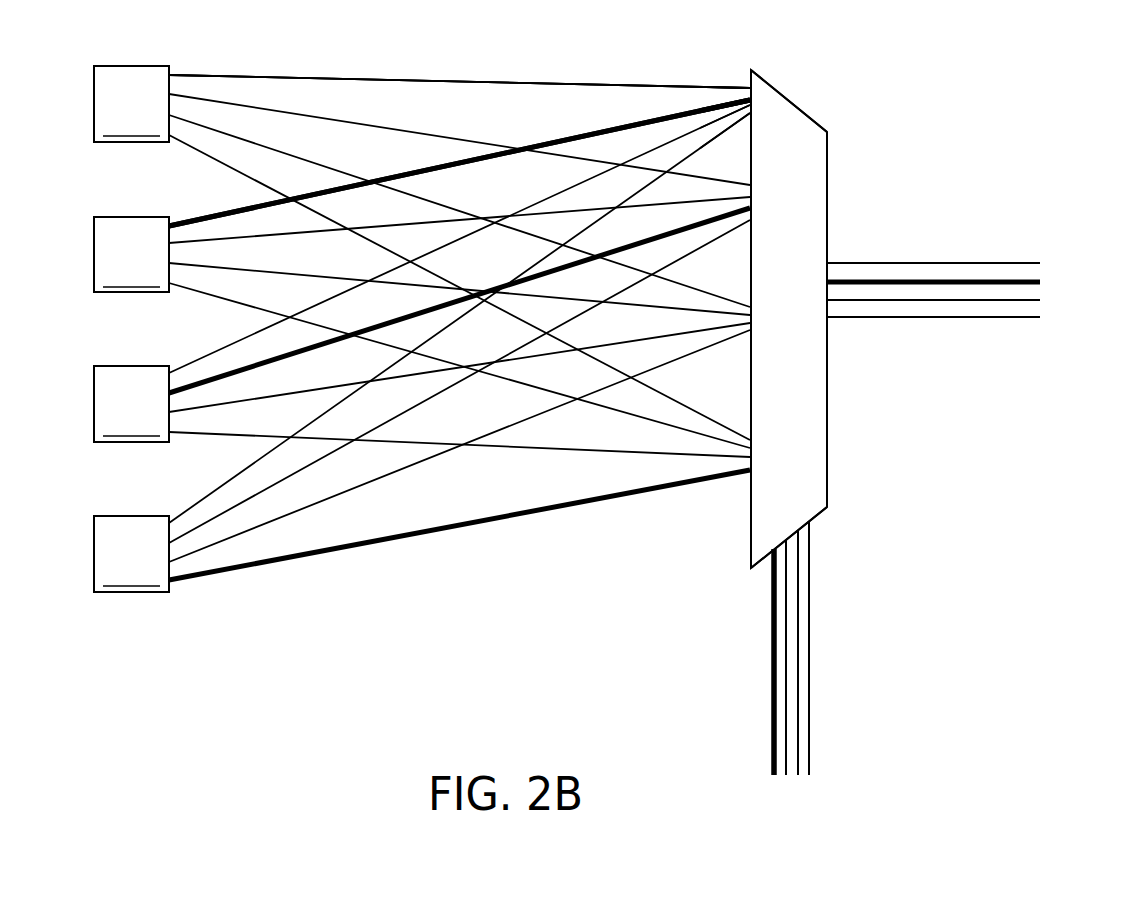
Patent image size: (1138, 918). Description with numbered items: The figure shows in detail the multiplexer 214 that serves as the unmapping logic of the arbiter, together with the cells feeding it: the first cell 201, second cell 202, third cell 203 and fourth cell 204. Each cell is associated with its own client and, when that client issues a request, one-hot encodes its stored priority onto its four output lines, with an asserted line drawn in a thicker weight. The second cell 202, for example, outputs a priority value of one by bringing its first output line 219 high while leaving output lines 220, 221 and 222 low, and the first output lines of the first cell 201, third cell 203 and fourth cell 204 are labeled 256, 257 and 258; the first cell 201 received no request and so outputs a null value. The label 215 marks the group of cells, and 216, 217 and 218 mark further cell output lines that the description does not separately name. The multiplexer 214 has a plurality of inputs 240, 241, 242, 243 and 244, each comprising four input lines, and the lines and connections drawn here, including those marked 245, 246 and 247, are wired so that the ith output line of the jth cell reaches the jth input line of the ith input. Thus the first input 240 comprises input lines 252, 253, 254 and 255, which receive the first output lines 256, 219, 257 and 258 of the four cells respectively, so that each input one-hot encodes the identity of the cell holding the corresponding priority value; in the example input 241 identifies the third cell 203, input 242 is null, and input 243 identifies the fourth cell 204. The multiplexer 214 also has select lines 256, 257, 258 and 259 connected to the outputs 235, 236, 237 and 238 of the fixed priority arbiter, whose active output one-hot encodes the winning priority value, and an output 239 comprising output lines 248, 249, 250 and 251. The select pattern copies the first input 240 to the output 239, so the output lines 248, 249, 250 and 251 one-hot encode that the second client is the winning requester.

The first cell 201 is at (131, 104).
The second cell 202 is at (131, 254).
The third cell 203 is at (131, 404).
The fourth cell 204 is at (131, 554).
The multiplexer 214 is at (809, 397).
The transmitter array 215 is at (187, 57).
The optical signal beam 216 is at (203, 212).
The optical signal beam 217 is at (210, 415).
The selected optical signal beam 218 is at (203, 575).
The first output line of second cell 219 is at (190, 217).
The second output line of second cell 220 is at (208, 240).
The third output line of second cell 221 is at (233, 267).
The fourth output line of second cell 222 is at (213, 293).
The first fixed priority arbiter output 235 is at (774, 742).
The second fixed priority arbiter output 236 is at (787, 738).
The third fixed priority arbiter output 237 is at (798, 732).
The fourth fixed priority arbiter output 238 is at (810, 755).
The multiplexer output 239 is at (872, 237).
The first multiplexer input 240 is at (746, 82).
The second multiplexer input 241 is at (806, 182).
The third multiplexer input 242 is at (764, 315).
The fourth multiplexer input 243 is at (795, 460).
The multiplexer input 244 is at (690, 82).
The multiplexer input connection 245 is at (708, 185).
The multiplexer input connection 246 is at (728, 283).
The multiplexer input connection 247 is at (708, 403).
The first multiplexer output line 248 is at (940, 263).
The second multiplexer output line 249 is at (1036, 282).
The third multiplexer output line 250 is at (1036, 300).
The fourth multiplexer output line 251 is at (970, 317).
The first input line of first multiplexer input 252 is at (752, 83).
The second input line of first multiplexer input 253 is at (753, 100).
The third input line of first multiplexer input 254 is at (751, 104).
The fourth input line of first multiplexer input 255 is at (753, 112).
The select line 256 is at (185, 75).
The select line 257 is at (200, 362).
The select line 258 is at (208, 495).
The select line 259 is at (810, 582).